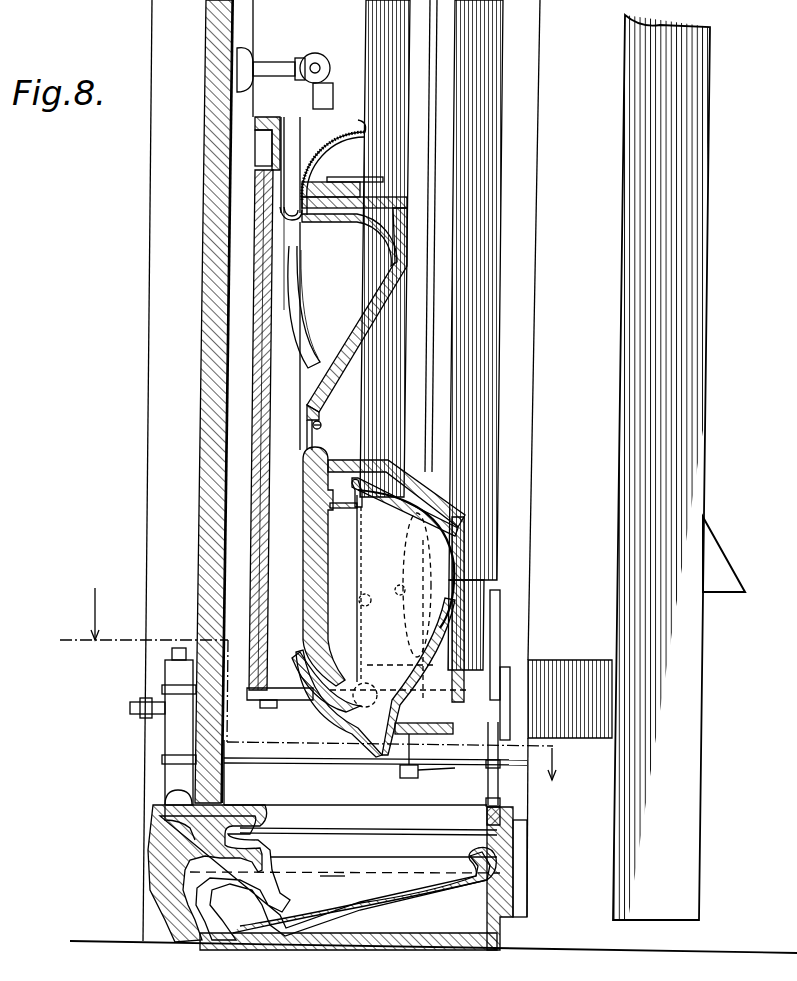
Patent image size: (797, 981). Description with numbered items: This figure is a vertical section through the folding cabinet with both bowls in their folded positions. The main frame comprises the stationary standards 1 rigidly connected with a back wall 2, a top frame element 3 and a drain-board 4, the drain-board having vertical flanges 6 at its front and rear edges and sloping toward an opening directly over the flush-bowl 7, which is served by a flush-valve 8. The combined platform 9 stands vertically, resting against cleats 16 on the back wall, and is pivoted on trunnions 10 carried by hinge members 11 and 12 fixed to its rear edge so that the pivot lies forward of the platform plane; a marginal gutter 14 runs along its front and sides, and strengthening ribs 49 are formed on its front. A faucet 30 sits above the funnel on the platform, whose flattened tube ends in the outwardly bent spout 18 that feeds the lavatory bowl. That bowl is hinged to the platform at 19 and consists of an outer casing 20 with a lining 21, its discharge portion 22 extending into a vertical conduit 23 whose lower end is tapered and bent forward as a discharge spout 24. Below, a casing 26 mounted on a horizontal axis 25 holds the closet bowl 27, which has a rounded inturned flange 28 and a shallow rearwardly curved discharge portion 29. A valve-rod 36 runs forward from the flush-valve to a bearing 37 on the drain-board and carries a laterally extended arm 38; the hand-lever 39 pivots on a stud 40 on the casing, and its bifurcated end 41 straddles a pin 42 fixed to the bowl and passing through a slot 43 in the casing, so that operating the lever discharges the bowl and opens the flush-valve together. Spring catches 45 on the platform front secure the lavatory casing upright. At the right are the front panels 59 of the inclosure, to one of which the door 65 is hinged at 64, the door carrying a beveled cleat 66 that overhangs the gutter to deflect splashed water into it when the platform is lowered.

The main standards 1 is at (151, 262).
The back wall 2 is at (192, 200).
The top frame element 3 is at (204, 318).
The drain-board 4 is at (308, 815).
The vertical flanges 6 is at (316, 684).
The flush-bowl 7 is at (332, 883).
The flush-valve 8 is at (149, 726).
The platform 9 is at (255, 378).
The trunnions 10 is at (375, 623).
The hinge member 11 is at (333, 118).
The hinge member 12 is at (291, 702).
The marginal gutter 14 is at (263, 147).
The cleats 16 is at (236, 262).
The spout 18 is at (316, 333).
The hinge 19 is at (401, 236).
The outer casing 20 is at (408, 254).
The lining 21 is at (388, 243).
The discharge portion 22 is at (312, 427).
The vertical conduit 23 is at (272, 535).
The discharge spout 24 is at (328, 688).
The horizontal axis 25 is at (424, 739).
The casing 26 is at (464, 540).
The closet bowl 27 is at (417, 606).
The inturned flange 28 is at (358, 580).
The discharge portion 29 is at (378, 752).
The faucet 30 is at (312, 52).
The valve-rod 36 is at (268, 762).
The bearing 37 is at (490, 763).
The arm 38 is at (425, 766).
The hand-lever 39 is at (492, 482).
The stud 40 is at (382, 583).
The bifurcated end 41 is at (402, 470).
The pin 42 is at (425, 482).
The slot 43 is at (320, 426).
The spring catches 45 is at (349, 161).
The strengthening ribs 49 is at (385, 248).
The panels 59 is at (540, 300).
The hinge 64 is at (612, 660).
The door 65 is at (678, 467).
The beveled cleat 66 is at (722, 556).